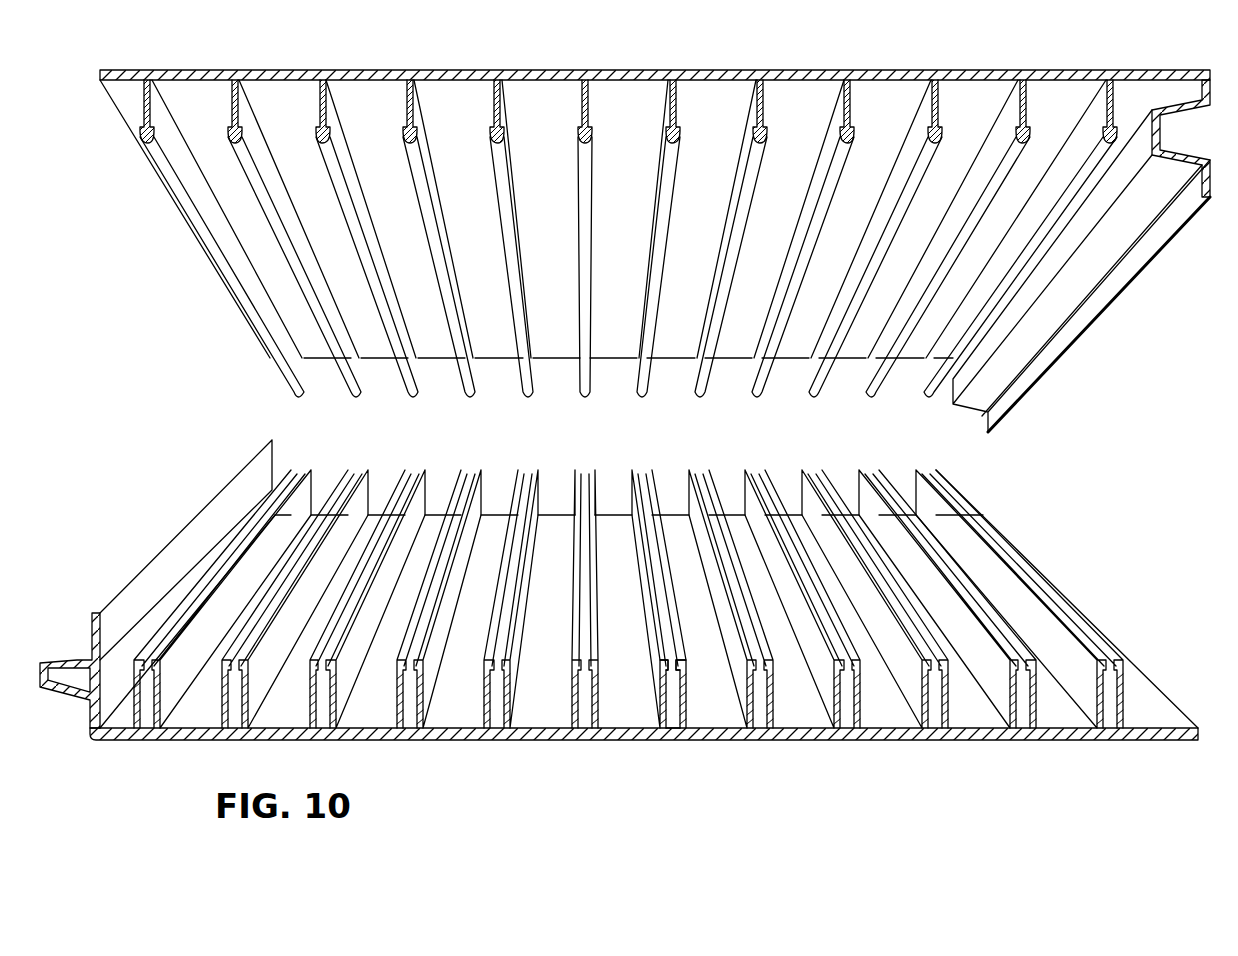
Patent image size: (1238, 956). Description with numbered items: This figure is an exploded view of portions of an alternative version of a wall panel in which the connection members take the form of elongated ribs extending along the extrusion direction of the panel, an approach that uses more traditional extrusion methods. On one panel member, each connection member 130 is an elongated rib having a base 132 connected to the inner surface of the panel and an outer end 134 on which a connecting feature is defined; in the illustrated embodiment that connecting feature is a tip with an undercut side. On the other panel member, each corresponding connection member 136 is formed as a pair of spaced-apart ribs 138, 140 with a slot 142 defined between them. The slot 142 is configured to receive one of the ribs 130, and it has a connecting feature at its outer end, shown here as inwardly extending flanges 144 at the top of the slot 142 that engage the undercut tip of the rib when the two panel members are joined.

The connection member 130 is at (655, 227).
The base 132 is at (591, 95).
The outer end 134 is at (592, 162).
The connection member 136 is at (692, 699).
The rib 138 is at (686, 690).
The rib 140 is at (655, 684).
The slot 142 is at (672, 698).
The inwardly extending flange 144 is at (666, 679).